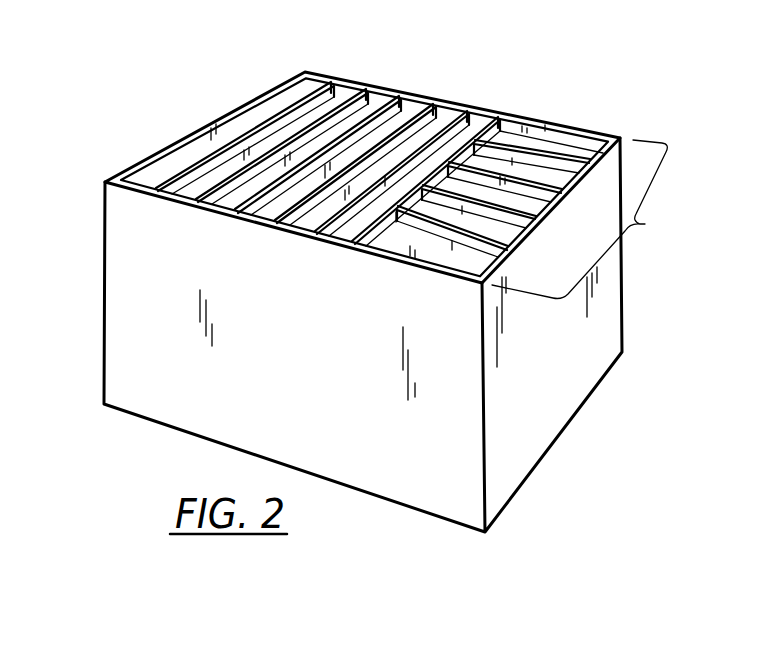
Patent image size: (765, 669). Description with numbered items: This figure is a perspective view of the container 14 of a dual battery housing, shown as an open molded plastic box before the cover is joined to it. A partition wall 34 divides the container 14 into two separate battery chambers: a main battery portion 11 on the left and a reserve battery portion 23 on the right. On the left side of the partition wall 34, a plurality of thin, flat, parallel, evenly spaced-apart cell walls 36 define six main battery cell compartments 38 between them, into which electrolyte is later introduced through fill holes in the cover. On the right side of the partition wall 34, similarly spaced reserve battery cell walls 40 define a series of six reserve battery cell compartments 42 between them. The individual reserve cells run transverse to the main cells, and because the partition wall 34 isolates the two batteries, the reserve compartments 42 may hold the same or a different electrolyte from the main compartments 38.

The main battery portion 11 is at (331, 253).
The container 14 is at (545, 441).
The reserve battery portion 23 is at (589, 219).
The partition wall 34 is at (503, 126).
The cell walls 36 is at (323, 79).
The main battery cell compartments 38 is at (378, 92).
The reserve battery cell walls 40 is at (558, 150).
The reserve battery cell compartments 42 is at (540, 194).